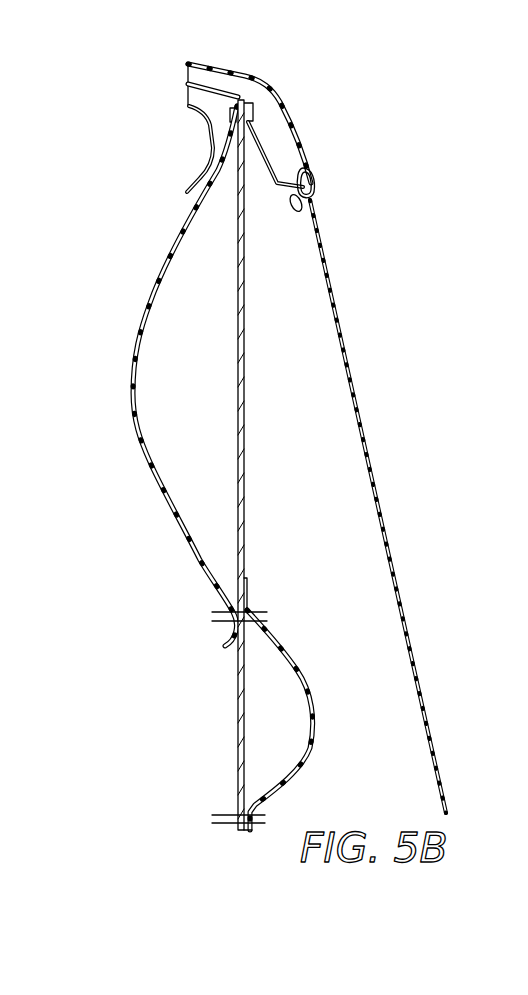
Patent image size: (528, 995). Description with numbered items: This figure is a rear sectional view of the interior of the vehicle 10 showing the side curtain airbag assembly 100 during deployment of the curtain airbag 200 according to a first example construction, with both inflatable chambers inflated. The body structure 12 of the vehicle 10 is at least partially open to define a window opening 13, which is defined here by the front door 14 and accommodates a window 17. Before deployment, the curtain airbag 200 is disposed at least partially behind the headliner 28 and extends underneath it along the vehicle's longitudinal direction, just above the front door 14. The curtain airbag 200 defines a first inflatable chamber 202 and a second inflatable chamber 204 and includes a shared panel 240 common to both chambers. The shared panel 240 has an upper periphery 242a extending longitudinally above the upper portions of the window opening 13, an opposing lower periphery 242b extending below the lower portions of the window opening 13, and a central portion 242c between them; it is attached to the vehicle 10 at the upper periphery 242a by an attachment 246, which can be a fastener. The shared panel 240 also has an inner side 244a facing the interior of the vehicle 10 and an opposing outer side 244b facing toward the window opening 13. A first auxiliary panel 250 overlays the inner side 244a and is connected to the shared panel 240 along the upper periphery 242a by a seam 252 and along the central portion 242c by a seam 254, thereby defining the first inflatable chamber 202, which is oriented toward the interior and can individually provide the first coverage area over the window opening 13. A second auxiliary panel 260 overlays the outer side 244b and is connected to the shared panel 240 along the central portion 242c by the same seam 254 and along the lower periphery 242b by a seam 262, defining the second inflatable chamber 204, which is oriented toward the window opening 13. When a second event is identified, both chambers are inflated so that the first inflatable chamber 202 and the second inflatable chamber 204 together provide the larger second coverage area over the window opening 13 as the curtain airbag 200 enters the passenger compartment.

The vehicle 10 is at (313, 132).
The body structure 12 is at (314, 167).
The front door 14 is at (318, 188).
The window opening 13 is at (352, 466).
The window 17 is at (338, 318).
The headliner 28 is at (189, 186).
The side curtain airbag assembly 100 is at (227, 133).
The curtain airbag 200 is at (217, 162).
The first inflatable chamber 202 is at (158, 376).
The second inflatable chamber 204 is at (313, 720).
The shared panel 240 is at (245, 330).
The upper periphery 242a is at (243, 149).
The lower periphery 242b is at (251, 805).
The central portion 242c is at (245, 389).
The inner side 244a is at (237, 430).
The outer side 244b is at (245, 450).
The attachment 246 is at (253, 89).
The seam 252 is at (250, 104).
The first auxiliary panel 250 is at (133, 392).
The seam 254 is at (212, 622).
The second auxiliary panel 260 is at (317, 713).
The seam 262 is at (212, 813).